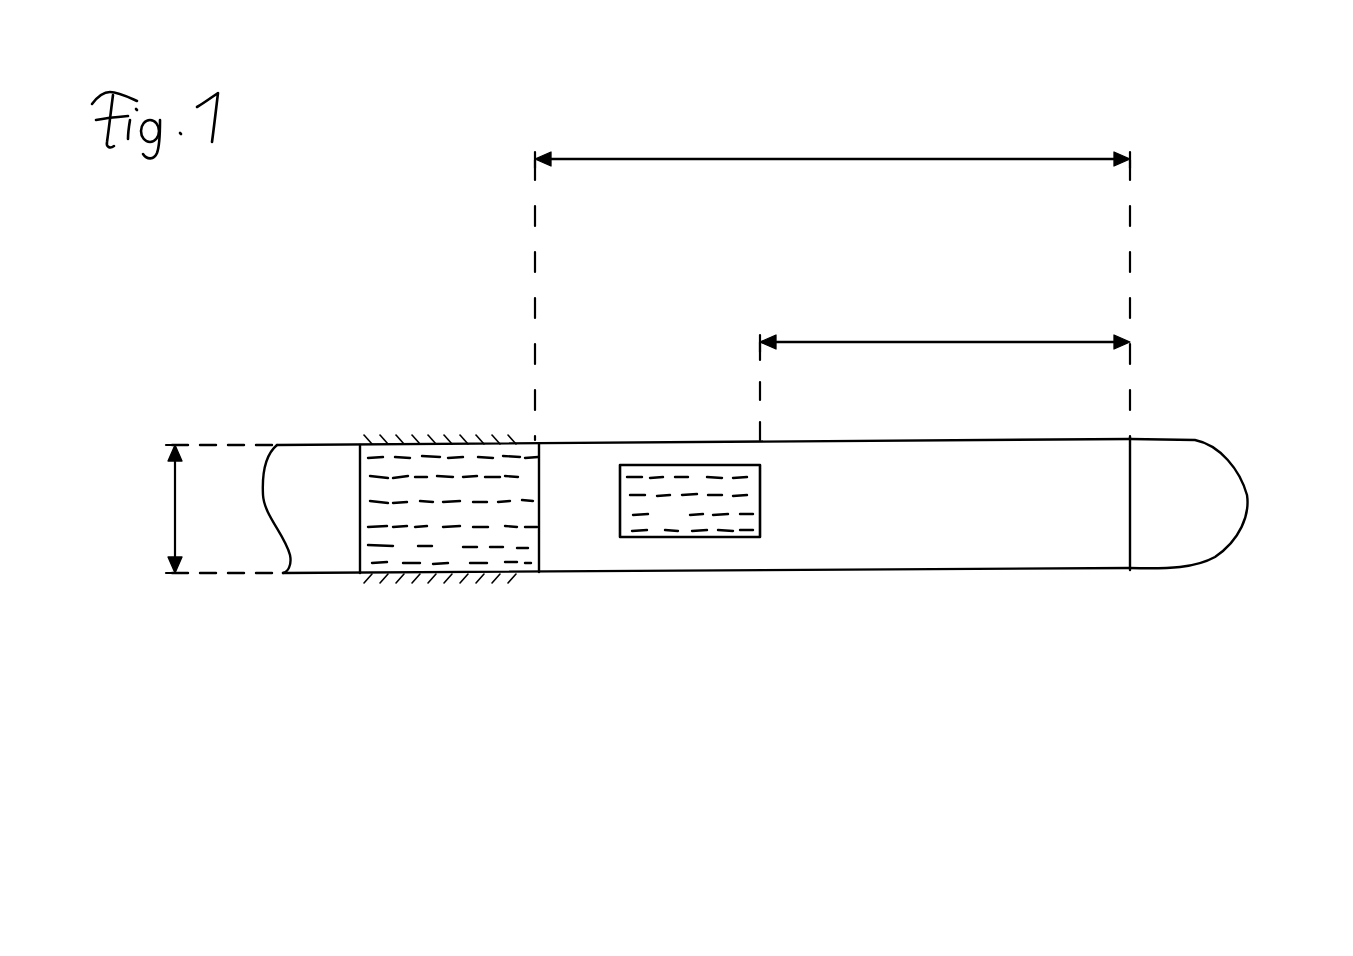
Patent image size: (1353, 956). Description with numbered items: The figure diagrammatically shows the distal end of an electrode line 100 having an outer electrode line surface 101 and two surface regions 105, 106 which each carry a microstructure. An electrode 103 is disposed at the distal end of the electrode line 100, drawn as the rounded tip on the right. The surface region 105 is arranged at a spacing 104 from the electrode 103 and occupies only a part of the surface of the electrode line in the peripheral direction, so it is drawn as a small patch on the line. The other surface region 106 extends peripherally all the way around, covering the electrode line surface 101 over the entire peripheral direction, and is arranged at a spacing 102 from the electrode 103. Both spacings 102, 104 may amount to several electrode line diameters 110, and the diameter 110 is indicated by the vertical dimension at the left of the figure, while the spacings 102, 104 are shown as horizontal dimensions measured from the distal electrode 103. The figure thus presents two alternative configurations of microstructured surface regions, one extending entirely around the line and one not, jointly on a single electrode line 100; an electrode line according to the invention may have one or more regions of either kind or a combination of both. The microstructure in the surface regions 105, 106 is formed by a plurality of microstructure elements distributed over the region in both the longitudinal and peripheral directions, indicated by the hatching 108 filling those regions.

The electrode line 100 is at (1174, 712).
The electrode line surface 101 is at (902, 568).
The spacing 102 is at (805, 158).
The electrode 103 is at (1221, 553).
The spacing 104 is at (887, 341).
The surface region 105 is at (712, 537).
The surface region 106 is at (543, 538).
The filling material 108 is at (413, 546).
The electrode line diameter 110 is at (172, 490).